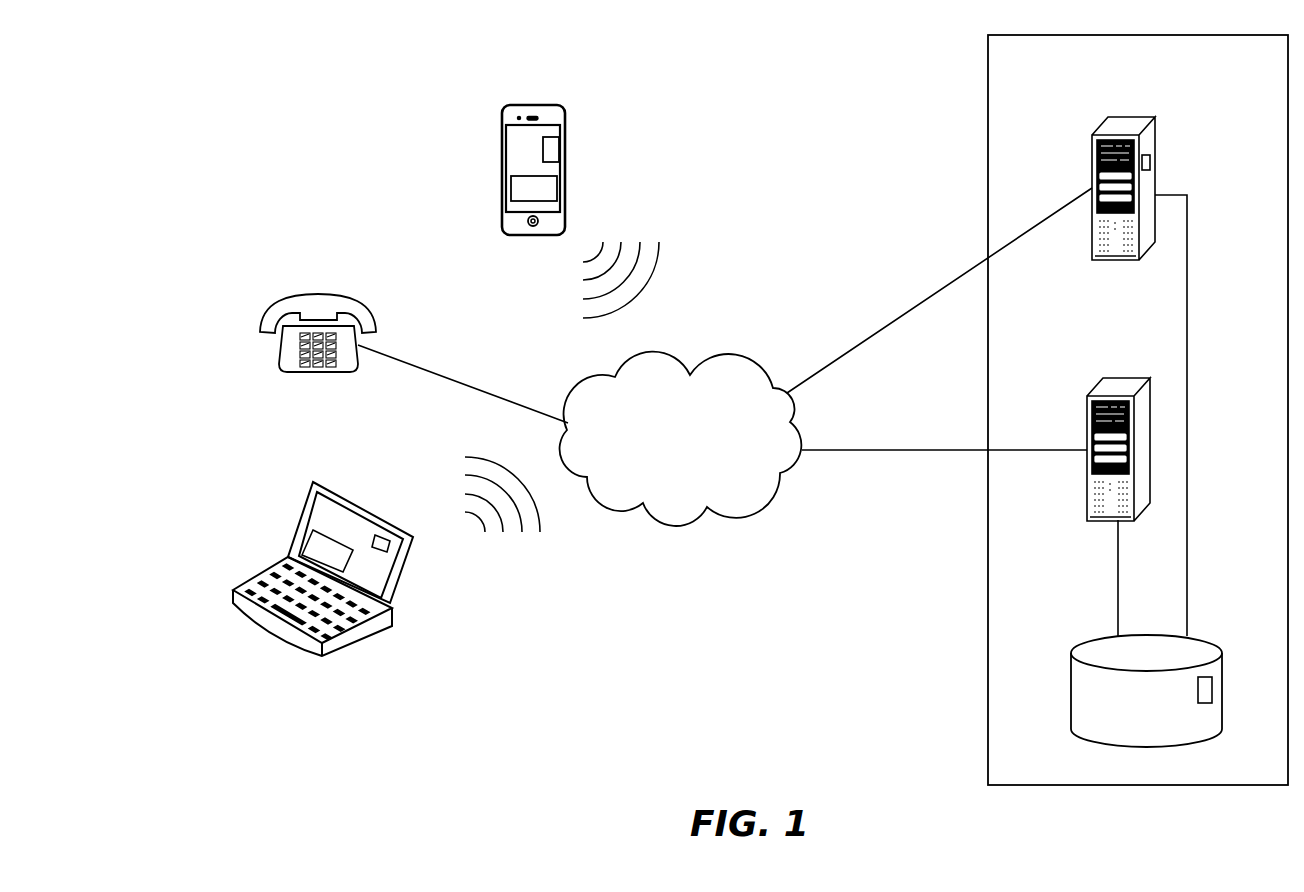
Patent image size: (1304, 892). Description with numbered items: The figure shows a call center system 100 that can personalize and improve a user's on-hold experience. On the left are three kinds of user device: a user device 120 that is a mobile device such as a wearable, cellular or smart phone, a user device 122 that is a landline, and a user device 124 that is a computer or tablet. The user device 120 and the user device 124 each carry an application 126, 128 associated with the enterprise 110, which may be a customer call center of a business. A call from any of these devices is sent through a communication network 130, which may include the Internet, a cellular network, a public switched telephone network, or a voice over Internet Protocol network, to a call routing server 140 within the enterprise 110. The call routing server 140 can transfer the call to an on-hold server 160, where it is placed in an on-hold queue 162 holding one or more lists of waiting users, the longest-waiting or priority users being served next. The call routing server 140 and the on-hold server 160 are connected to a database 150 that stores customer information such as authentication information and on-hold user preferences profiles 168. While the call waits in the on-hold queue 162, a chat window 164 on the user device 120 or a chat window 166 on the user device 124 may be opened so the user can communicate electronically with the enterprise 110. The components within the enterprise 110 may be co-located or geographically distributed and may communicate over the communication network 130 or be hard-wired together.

The call center system 100 is at (232, 160).
The enterprise 110 is at (988, 100).
The user device 120 is at (565, 111).
The user device 122 is at (368, 301).
The user device 124 is at (409, 576).
The application 126 is at (559, 151).
The application 128 is at (377, 535).
The communication network 130 is at (742, 358).
The call routing server 140 is at (1128, 378).
The database 150 is at (1200, 641).
The on-hold server 160 is at (1123, 117).
The on-hold queue 162 is at (1150, 161).
The chat window 164 is at (557, 189).
The chat window 166 is at (313, 531).
The on-hold user preferences profiles 168 is at (1212, 689).